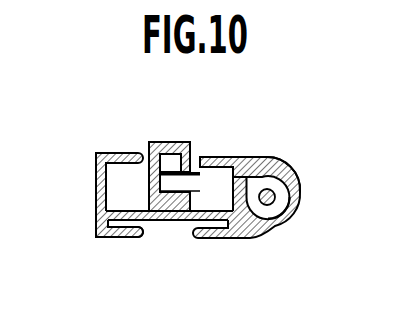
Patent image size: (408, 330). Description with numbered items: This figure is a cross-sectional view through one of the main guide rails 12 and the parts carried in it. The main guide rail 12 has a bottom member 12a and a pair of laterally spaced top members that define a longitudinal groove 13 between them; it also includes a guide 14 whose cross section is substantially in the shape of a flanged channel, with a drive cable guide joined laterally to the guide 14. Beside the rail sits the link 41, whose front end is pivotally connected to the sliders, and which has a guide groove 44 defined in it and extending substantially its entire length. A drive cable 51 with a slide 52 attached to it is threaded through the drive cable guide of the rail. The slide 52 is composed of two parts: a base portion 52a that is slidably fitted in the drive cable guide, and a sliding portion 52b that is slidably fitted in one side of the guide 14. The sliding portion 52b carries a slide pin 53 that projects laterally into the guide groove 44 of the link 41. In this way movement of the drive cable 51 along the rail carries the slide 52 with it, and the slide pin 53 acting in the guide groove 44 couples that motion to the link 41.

The main guide rail 12 is at (272, 160).
The bottom member 12a is at (154, 222).
The longitudinal groove 13 is at (147, 155).
The guide 14 is at (109, 192).
The link 41 is at (163, 150).
The guide groove 44 is at (185, 160).
The drive cable 51 is at (272, 202).
The slide 52 is at (247, 157).
The base portion 52a is at (282, 197).
The sliding portion 52b is at (217, 197).
The slide pin 53 is at (178, 183).